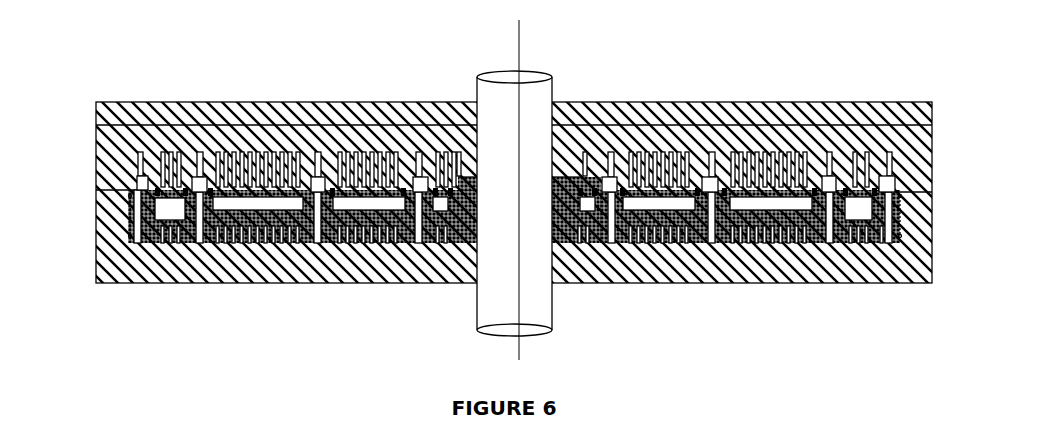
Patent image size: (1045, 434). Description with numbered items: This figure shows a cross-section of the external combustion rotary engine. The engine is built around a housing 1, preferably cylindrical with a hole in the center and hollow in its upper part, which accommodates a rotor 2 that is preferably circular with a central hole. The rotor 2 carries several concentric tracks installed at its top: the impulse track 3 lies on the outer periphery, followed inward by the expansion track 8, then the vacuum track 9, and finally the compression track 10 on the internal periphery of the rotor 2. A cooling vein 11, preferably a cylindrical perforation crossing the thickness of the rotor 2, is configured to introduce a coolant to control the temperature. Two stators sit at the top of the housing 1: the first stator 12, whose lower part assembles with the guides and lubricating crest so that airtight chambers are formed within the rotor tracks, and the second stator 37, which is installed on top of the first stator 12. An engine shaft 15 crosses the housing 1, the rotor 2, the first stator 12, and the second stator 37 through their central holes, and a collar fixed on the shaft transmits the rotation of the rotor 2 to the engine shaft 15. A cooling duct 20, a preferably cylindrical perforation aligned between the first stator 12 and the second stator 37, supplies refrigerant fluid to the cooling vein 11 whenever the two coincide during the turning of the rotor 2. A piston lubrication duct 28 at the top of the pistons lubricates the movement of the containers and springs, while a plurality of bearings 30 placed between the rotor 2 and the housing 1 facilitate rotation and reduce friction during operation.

The housing 1 is at (895, 258).
The rotor 2 is at (338, 183).
The impulse track 3 is at (130, 233).
The expansion track 8 is at (258, 205).
The vacuum track 9 is at (366, 207).
The compression track 10 is at (442, 209).
The cooling vein 11 is at (153, 177).
The first stator 12 is at (126, 175).
The engine shaft 15 is at (533, 105).
The cooling duct 20 is at (203, 183).
The piston lubrication duct 28 is at (143, 188).
The bearings 30 is at (888, 180).
The second stator 37 is at (115, 137).